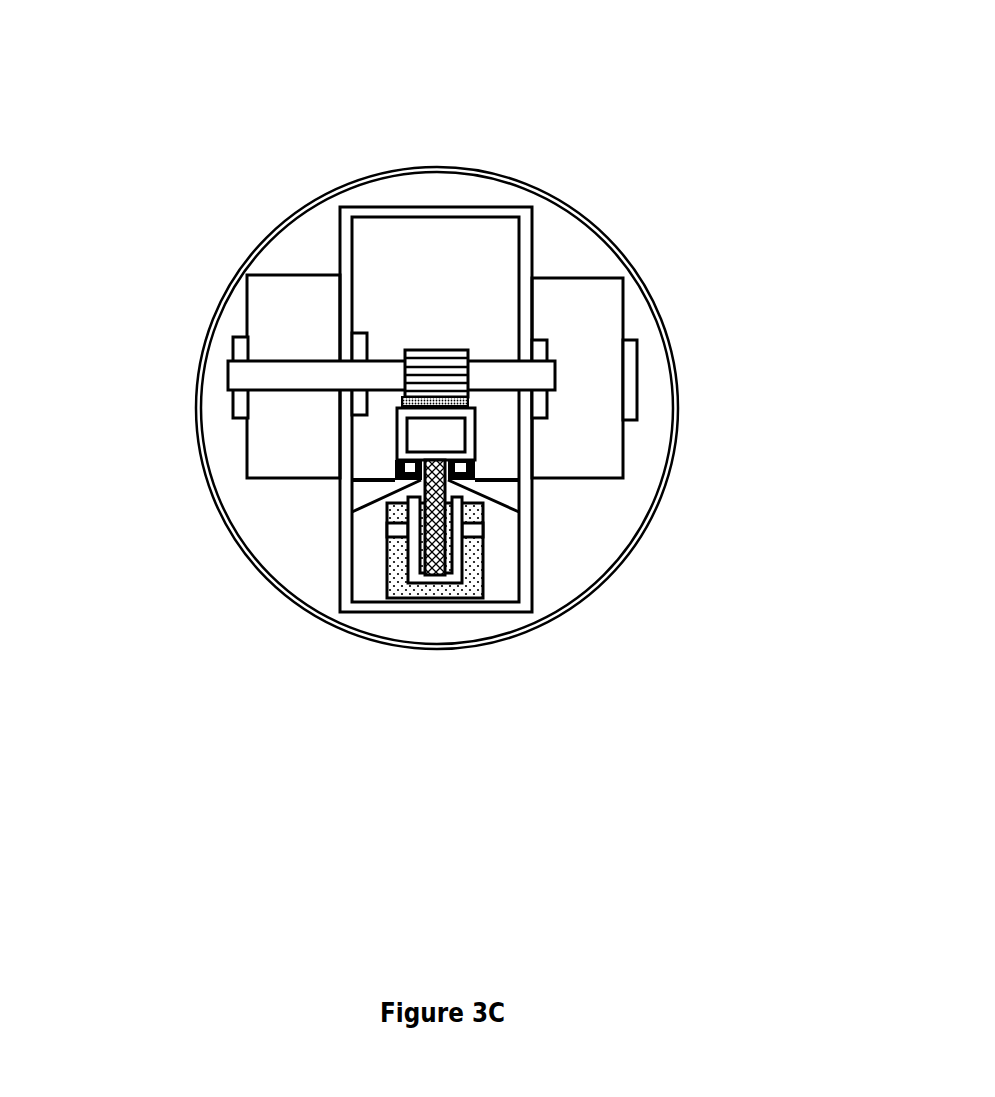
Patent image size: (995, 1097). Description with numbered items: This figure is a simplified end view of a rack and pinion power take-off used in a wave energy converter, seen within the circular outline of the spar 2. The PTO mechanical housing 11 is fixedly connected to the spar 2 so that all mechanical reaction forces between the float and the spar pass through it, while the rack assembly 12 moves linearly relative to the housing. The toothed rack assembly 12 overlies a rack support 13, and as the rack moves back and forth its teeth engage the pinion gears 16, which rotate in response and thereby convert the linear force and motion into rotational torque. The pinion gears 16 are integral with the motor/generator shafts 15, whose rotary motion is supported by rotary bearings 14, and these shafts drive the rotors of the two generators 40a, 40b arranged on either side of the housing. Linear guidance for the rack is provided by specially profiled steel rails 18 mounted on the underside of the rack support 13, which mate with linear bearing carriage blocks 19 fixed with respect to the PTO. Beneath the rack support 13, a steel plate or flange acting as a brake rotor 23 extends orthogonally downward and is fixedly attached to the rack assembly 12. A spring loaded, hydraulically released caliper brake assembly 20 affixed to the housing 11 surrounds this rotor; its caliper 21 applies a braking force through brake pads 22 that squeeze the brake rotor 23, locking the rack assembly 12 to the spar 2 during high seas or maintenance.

The spar 2 is at (573, 209).
The PTO mechanical housing 11 is at (533, 549).
The rack assembly 12 is at (468, 398).
The rack support 13 is at (476, 426).
The rotary bearings 14 is at (637, 363).
The motor/generator shafts 15 is at (505, 378).
The pinion gears 16 is at (430, 348).
The steel rails 18 is at (395, 462).
The linear bearing carriage blocks 19 is at (397, 477).
The caliper brake assembly 20 is at (397, 585).
The caliper 21 is at (387, 529).
The brake pads 22 is at (413, 552).
The brake rotor 23 is at (448, 530).
The generator 40a is at (624, 489).
The generator 40b is at (267, 301).